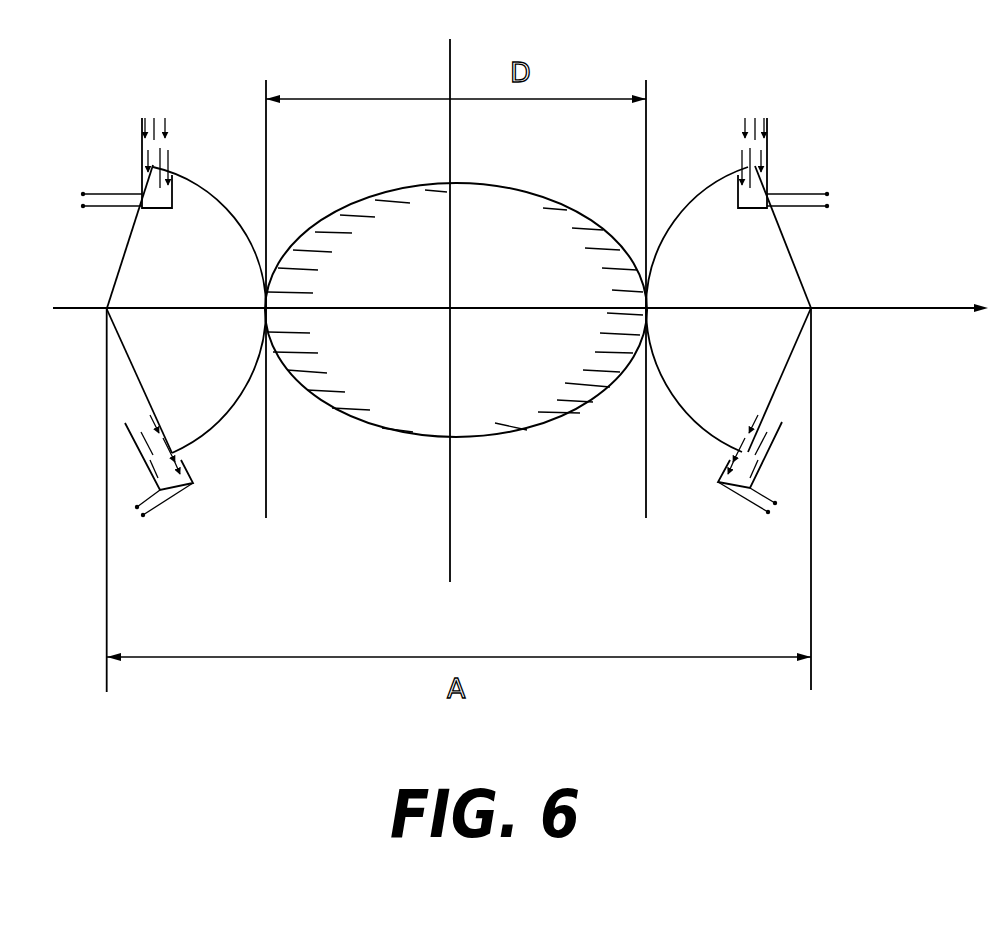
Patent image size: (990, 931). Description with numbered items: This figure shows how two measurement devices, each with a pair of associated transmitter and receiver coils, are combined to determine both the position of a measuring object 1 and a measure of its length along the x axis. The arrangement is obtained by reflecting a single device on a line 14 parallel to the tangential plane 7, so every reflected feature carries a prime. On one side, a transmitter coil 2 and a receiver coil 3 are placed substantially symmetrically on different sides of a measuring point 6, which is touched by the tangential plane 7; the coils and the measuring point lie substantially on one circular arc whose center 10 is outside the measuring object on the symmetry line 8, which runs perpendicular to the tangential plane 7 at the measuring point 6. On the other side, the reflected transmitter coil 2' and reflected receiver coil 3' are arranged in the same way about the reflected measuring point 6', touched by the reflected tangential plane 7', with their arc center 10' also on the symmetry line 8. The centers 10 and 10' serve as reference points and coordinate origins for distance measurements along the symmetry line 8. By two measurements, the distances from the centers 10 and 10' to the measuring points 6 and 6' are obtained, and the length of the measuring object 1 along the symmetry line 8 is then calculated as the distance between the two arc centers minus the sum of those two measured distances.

The measuring object 1 is at (493, 194).
The transmitter coil 2 is at (780, 452).
The reflected transmitter coil 2' is at (125, 456).
The receiver coil 3 is at (783, 131).
The reflected receiver coil 3' is at (126, 132).
The measuring point 6 is at (697, 309).
The reflected measuring point 6' is at (209, 310).
The tangential plane 7 is at (682, 287).
The reflected tangential plane 7' is at (226, 287).
The symmetry line 8 is at (935, 307).
The center of the circular arc 10 is at (816, 428).
The reflected center of the circular arc 10' is at (104, 428).
The reflection line 14 is at (450, 53).